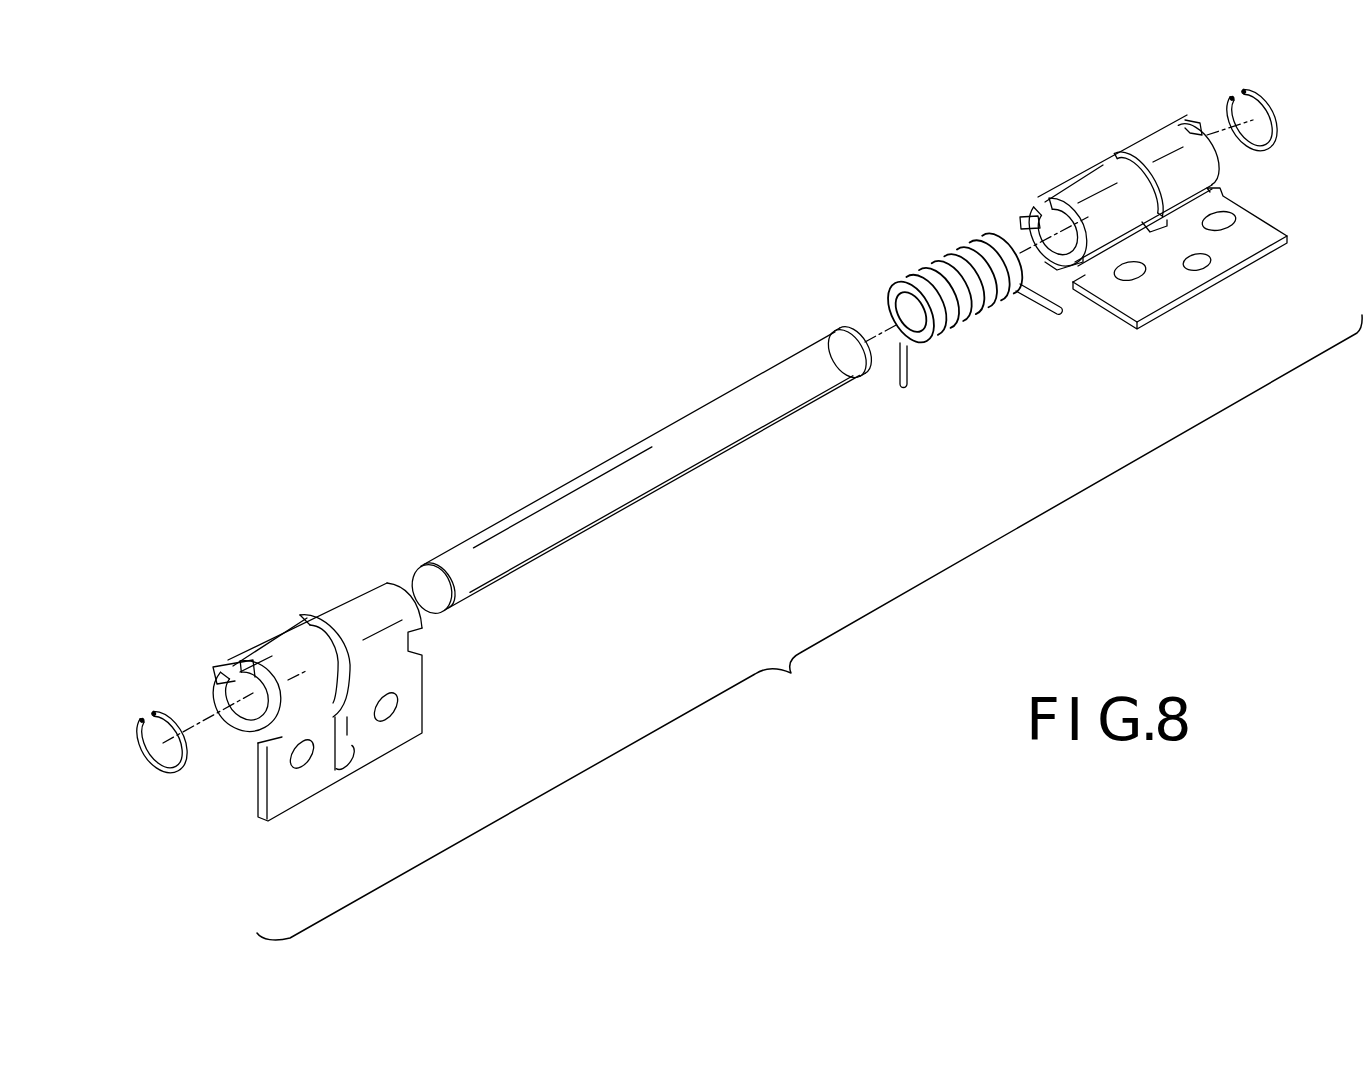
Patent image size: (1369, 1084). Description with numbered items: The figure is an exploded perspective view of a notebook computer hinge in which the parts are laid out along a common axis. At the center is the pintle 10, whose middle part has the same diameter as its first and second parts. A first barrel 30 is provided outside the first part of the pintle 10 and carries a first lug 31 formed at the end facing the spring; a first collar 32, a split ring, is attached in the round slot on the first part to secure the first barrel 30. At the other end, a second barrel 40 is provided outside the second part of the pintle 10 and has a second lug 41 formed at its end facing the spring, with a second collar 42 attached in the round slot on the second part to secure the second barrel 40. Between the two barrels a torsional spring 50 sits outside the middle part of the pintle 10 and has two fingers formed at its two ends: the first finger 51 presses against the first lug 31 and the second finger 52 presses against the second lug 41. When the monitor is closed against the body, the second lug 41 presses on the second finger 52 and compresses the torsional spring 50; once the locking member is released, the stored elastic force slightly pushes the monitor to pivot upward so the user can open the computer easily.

The pintle 10 is at (691, 500).
The first barrel 30 is at (334, 666).
The first lug 31 is at (405, 585).
The first collar 32 is at (178, 772).
The second barrel 40 is at (1135, 229).
The second lug 41 is at (1027, 220).
The second collar 42 is at (1276, 137).
The torsional spring 50 is at (964, 321).
The first finger 51 is at (908, 378).
The second finger 52 is at (1050, 308).